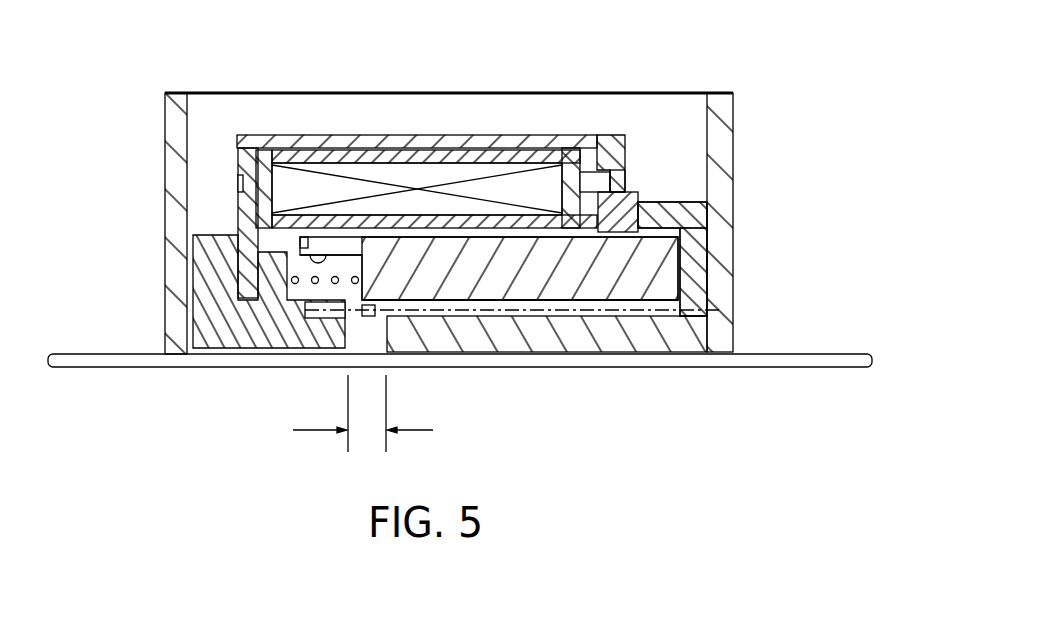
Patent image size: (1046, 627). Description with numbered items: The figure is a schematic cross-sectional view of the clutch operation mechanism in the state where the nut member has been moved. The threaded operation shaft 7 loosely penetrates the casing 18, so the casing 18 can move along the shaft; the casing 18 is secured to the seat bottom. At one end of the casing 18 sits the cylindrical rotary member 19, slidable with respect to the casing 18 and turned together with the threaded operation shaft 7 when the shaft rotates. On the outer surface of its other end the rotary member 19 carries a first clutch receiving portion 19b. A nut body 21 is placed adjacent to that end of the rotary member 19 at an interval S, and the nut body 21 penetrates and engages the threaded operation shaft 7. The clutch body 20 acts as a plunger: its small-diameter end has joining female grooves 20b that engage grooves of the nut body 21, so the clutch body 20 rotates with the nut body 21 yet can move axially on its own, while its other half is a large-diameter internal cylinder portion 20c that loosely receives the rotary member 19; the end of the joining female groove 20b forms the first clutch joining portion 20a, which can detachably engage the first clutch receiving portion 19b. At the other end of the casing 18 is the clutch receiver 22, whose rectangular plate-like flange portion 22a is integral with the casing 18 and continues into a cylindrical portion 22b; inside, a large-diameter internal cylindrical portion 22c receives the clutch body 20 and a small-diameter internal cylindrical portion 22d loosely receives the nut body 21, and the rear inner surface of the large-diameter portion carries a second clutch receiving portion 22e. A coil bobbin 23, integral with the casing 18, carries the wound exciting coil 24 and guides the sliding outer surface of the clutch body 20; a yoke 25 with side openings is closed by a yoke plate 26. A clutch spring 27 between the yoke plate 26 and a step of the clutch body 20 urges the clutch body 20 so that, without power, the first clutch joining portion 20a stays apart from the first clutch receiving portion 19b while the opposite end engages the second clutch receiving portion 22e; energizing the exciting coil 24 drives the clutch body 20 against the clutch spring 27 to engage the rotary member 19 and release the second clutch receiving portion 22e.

The threaded operation shaft 7 is at (108, 390).
The casing 18 is at (178, 105).
The rotary member 19 is at (245, 322).
The first clutch receiving portion 19b is at (328, 312).
The clutch body 20 is at (502, 268).
The first clutch joining portion 20a is at (372, 305).
The joining female grooves 20b is at (573, 316).
The internal cylinder portion 20c is at (303, 237).
The nut body 21 is at (667, 343).
The clutch receiver 22 is at (620, 147).
The flange portion 22a is at (603, 134).
The cylindrical portion 22b is at (638, 222).
The large-diameter internal cylindrical portion 22c is at (652, 195).
The small-diameter internal cylindrical portion 22d is at (688, 302).
The second clutch receiving portion 22e is at (657, 242).
The coil bobbin 23 is at (262, 137).
The exciting coil 24 is at (460, 172).
The yoke 25 is at (397, 142).
The yoke plate 26 is at (245, 202).
The clutch spring 27 is at (310, 278).
The interval S is at (363, 414).